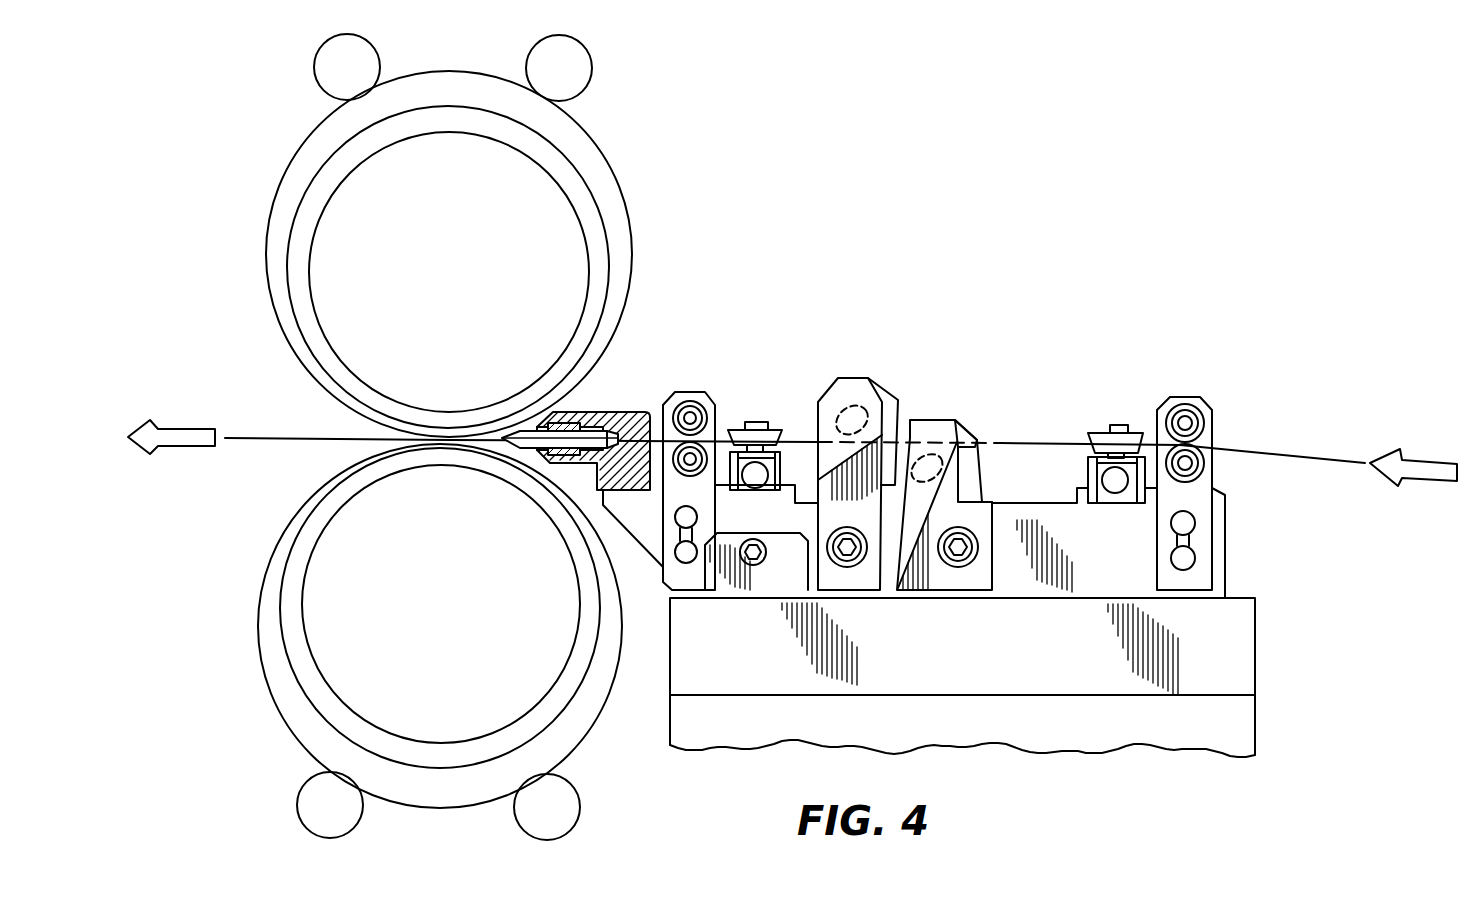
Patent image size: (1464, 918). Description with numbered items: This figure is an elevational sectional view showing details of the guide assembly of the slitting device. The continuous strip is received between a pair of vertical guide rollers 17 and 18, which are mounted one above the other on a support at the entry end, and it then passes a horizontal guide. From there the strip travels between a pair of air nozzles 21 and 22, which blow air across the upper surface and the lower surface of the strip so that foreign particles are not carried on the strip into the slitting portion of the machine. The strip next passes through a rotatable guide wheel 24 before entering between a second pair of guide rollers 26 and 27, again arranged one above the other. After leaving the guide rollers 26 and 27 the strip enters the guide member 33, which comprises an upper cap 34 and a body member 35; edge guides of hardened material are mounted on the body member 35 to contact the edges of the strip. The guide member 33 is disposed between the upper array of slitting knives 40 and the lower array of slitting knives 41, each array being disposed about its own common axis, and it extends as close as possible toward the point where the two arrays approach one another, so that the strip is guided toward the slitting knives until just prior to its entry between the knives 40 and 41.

The vertical guide roller 17 is at (1210, 403).
The vertical guide roller 18 is at (1212, 477).
The air nozzle 21 is at (850, 378).
The air nozzle 22 is at (937, 420).
The rotatable guide wheel 24 is at (775, 428).
The guide roller 26 is at (698, 392).
The guide roller 27 is at (697, 480).
The guide member 33 is at (625, 411).
The upper cap 34 is at (575, 411).
The body member 35 is at (672, 505).
The upper array of slitting knives 40 is at (287, 238).
The lower array of slitting knives 41 is at (280, 645).